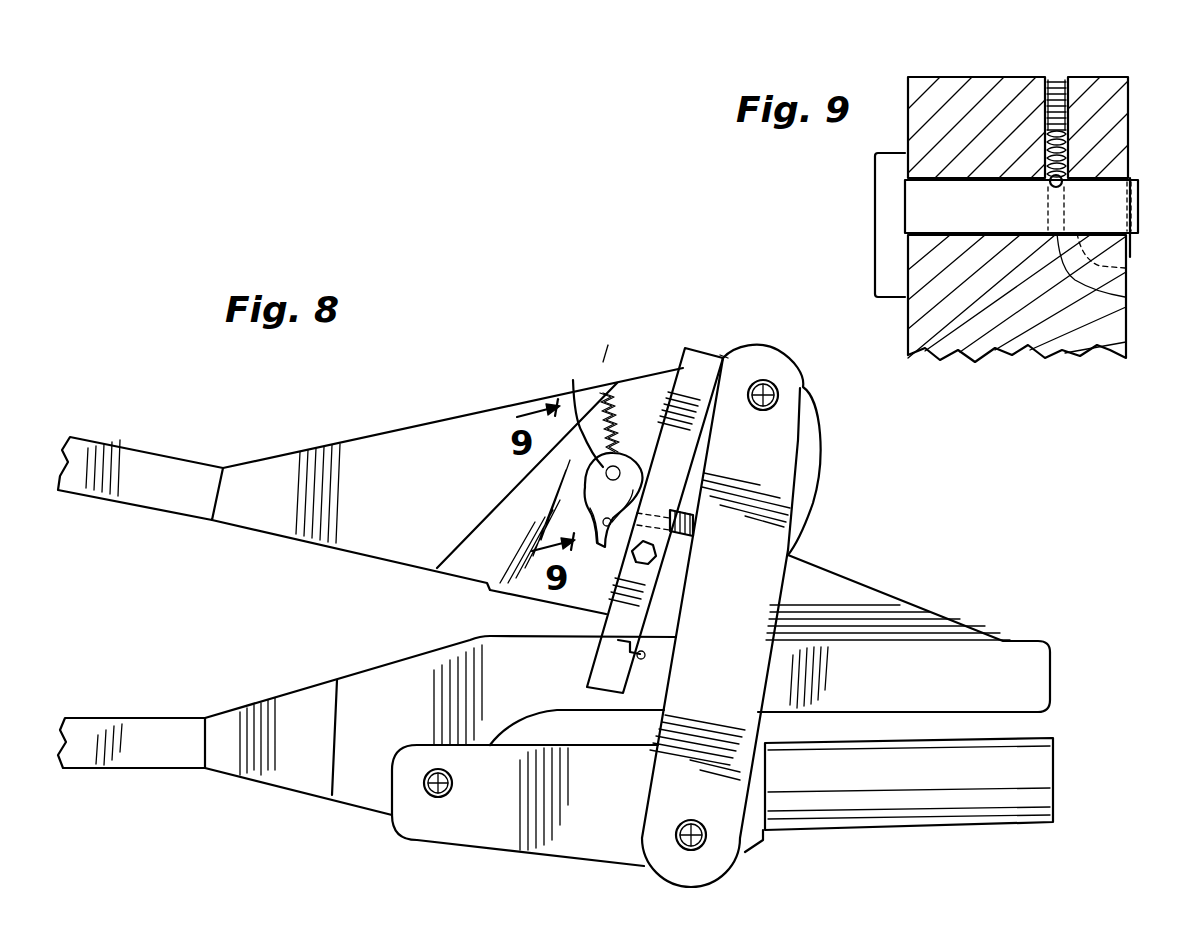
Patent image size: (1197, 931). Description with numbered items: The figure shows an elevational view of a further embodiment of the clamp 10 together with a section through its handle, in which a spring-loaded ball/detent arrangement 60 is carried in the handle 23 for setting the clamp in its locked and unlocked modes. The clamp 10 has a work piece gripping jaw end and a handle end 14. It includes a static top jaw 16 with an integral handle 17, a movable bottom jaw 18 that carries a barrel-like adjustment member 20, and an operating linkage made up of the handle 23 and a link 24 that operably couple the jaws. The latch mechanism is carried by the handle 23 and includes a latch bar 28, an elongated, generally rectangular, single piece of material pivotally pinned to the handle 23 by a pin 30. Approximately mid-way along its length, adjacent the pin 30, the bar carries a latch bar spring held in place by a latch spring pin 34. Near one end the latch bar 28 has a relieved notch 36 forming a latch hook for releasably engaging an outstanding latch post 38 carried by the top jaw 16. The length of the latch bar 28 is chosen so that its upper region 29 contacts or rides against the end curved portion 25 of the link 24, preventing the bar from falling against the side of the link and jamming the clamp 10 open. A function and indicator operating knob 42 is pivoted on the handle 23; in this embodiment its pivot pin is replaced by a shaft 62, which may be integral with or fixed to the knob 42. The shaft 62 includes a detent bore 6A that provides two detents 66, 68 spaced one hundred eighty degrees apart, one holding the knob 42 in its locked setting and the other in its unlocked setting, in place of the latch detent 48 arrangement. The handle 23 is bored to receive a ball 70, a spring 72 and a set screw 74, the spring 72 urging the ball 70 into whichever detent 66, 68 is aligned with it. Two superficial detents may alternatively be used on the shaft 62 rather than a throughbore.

In FIG. 8, the clamp 10 is at (912, 532).
In FIG. 8, the handle end 14 is at (175, 795).
In FIG. 8, the static top jaw 16 is at (405, 680).
In FIG. 8, the integral handle 17 is at (170, 758).
In FIG. 8, the movable bottom jaw 18 is at (628, 818).
In FIG. 8, the barrel-like adjustment member 20 is at (1008, 778).
In FIG. 8, the handle 23 is at (114, 452).
In FIG. 9, the handle 23 is at (940, 92).
In FIG. 8, the link 24 is at (733, 639).
In FIG. 8, the end curved portion 25 is at (757, 350).
In FIG. 8, the latch bar 28 is at (672, 430).
In FIG. 8, the upper region 29 is at (698, 357).
In FIG. 8, the pin 30 is at (648, 558).
In FIG. 8, the latch spring pin 34 is at (695, 527).
In FIG. 8, the relieved notch 36 is at (610, 665).
In FIG. 8, the latch post 38 is at (644, 658).
In FIG. 8, the function and indicator operating knob 42 is at (625, 488).
In FIG. 9, the function and indicator operating knob 42 is at (880, 163).
In FIG. 8, the latch detent 48 is at (647, 446).
In FIG. 8, the spring-loaded ball/detent arrangement 60 is at (604, 362).
In FIG. 8, the shaft 62 is at (577, 410).
In FIG. 9, the shaft 62 is at (990, 220).
In FIG. 9, the detent 66 is at (1048, 192).
In FIG. 9, the detent 68 is at (1110, 273).
In FIG. 9, the recess 6A is at (1121, 258).
In FIG. 9, the ball 70 is at (1062, 192).
In FIG. 9, the spring 72 is at (1070, 158).
In FIG. 9, the set screw 74 is at (1060, 110).